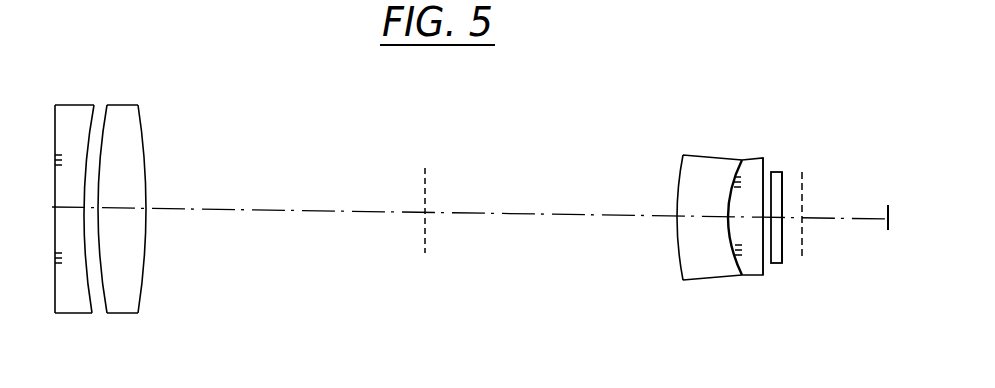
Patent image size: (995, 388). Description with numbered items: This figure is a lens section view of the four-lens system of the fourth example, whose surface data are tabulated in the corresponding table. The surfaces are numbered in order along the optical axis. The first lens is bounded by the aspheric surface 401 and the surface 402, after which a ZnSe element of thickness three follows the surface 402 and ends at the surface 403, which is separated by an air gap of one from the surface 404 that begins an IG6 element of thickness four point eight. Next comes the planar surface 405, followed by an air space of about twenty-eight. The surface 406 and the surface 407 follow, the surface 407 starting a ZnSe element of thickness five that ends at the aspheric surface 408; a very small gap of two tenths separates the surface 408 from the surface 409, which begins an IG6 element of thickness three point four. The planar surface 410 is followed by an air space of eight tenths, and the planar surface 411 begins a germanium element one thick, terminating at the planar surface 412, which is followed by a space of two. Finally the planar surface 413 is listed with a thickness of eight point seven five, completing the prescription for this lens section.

The surface 401 is at (56, 118).
The surface 402 is at (92, 305).
The surface 403 is at (107, 122).
The surface 404 is at (142, 293).
The surface 405 is at (425, 238).
The surface 406 is at (683, 172).
The surface 407 is at (738, 268).
The surface 408 is at (755, 160).
The surface 409 is at (770, 278).
The surface 410 is at (768, 170).
The surface 411 is at (783, 263).
The surface 412 is at (803, 173).
The surface 413 is at (876, 232).